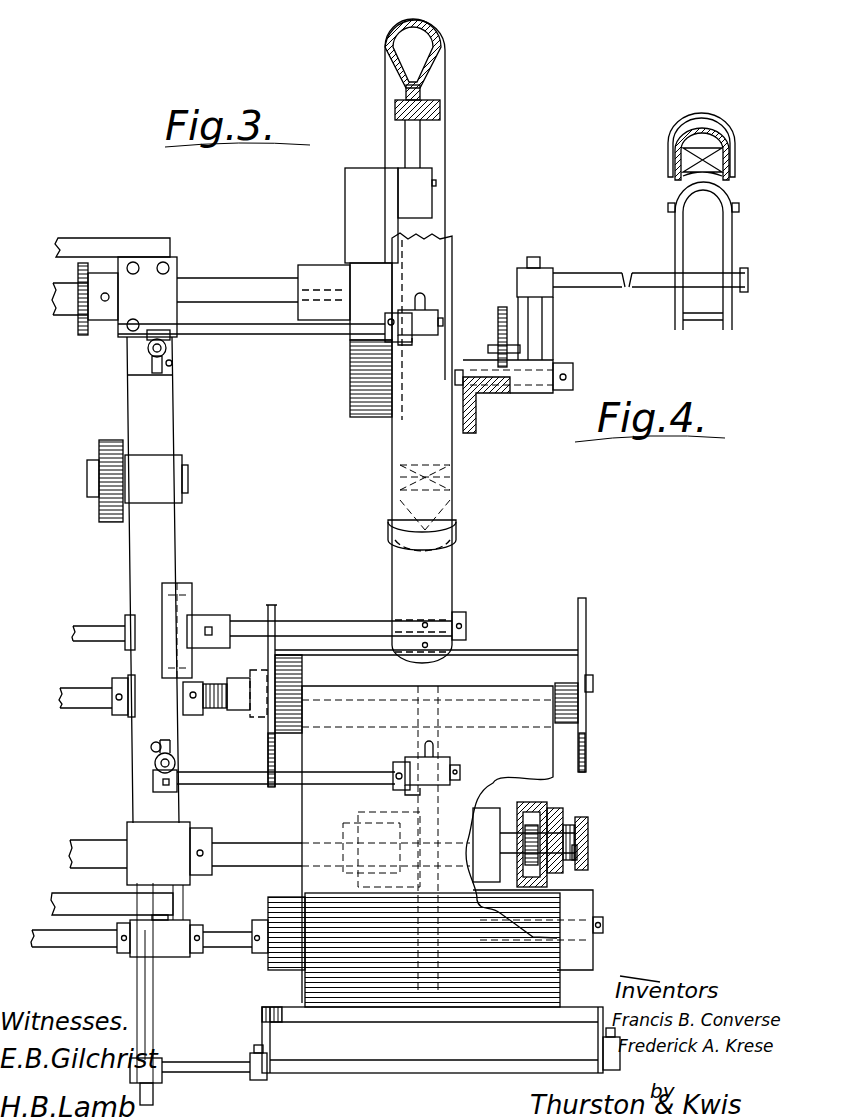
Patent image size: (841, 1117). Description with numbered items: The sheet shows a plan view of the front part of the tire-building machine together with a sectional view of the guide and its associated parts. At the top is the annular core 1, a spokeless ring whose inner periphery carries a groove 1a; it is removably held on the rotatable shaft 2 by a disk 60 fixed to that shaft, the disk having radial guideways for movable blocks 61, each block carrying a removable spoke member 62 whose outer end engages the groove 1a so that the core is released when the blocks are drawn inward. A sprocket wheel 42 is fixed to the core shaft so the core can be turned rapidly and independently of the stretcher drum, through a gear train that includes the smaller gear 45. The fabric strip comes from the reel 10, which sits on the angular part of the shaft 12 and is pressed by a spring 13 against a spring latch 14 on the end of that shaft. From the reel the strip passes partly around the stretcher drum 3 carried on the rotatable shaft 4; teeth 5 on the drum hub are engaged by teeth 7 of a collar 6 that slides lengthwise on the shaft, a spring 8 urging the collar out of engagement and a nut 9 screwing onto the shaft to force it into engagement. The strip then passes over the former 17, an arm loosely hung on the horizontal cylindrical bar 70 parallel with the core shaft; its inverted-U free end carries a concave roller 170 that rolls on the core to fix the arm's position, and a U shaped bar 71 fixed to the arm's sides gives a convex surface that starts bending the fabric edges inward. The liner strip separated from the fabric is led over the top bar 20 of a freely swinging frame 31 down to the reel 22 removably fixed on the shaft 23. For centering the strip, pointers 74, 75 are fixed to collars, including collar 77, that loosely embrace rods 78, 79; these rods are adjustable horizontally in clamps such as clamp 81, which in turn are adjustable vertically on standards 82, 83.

In FIG. 3, the annular core 1 is at (386, 45).
In FIG. 3, the groove 1a is at (412, 122).
In FIG. 3, the rotatable shaft 2 is at (218, 283).
In FIG. 3, the stretcher drum 3 is at (548, 752).
In FIG. 3, the rotatable shaft 4 is at (264, 843).
In FIG. 3, the teeth 5 is at (522, 814).
In FIG. 3, the collar 6 is at (551, 823).
In FIG. 3, the teeth 7 is at (533, 814).
In FIG. 3, the spring 8 is at (572, 826).
In FIG. 3, the nut 9 is at (580, 853).
In FIG. 3, the reel 10 is at (520, 652).
In FIG. 3, the shaft 12 is at (590, 682).
In FIG. 3, the spring 13 is at (224, 708).
In FIG. 3, the spring latch 14 is at (592, 690).
In FIG. 3, the former 17 is at (454, 560).
In FIG. 4, the former 17 is at (674, 186).
In FIG. 3, the top bar 20 is at (387, 1012).
In FIG. 3, the reel 22 is at (598, 893).
In FIG. 3, the shaft 23 is at (232, 930).
In FIG. 3, the freely swinging frame 31 is at (600, 1032).
In FIG. 3, the sprocket wheel 42 is at (83, 335).
In FIG. 3, the gear 45 is at (112, 522).
In FIG. 3, the disk 60 is at (371, 292).
In FIG. 3, the movable blocks 61 is at (417, 193).
In FIG. 3, the spoke member 62 is at (434, 200).
In FIG. 3, the horizontal cylindrical bar 70 is at (352, 621).
In FIG. 4, the horizontal cylindrical bar 70 is at (645, 288).
In FIG. 3, the U shaped bar 71 is at (400, 536).
In FIG. 4, the U shaped bar 71 is at (672, 122).
In FIG. 3, the pointer 74 is at (425, 298).
In FIG. 3, the pointer 75 is at (435, 752).
In FIG. 3, the collar 77 is at (436, 336).
In FIG. 3, the rod 78 is at (252, 334).
In FIG. 3, the rod 79 is at (335, 780).
In FIG. 3, the clamp 81 is at (410, 760).
In FIG. 3, the standard 82 is at (167, 351).
In FIG. 3, the standard 83 is at (175, 760).
In FIG. 3, the concave roller 170 is at (450, 463).
In FIG. 4, the concave roller 170 is at (674, 162).